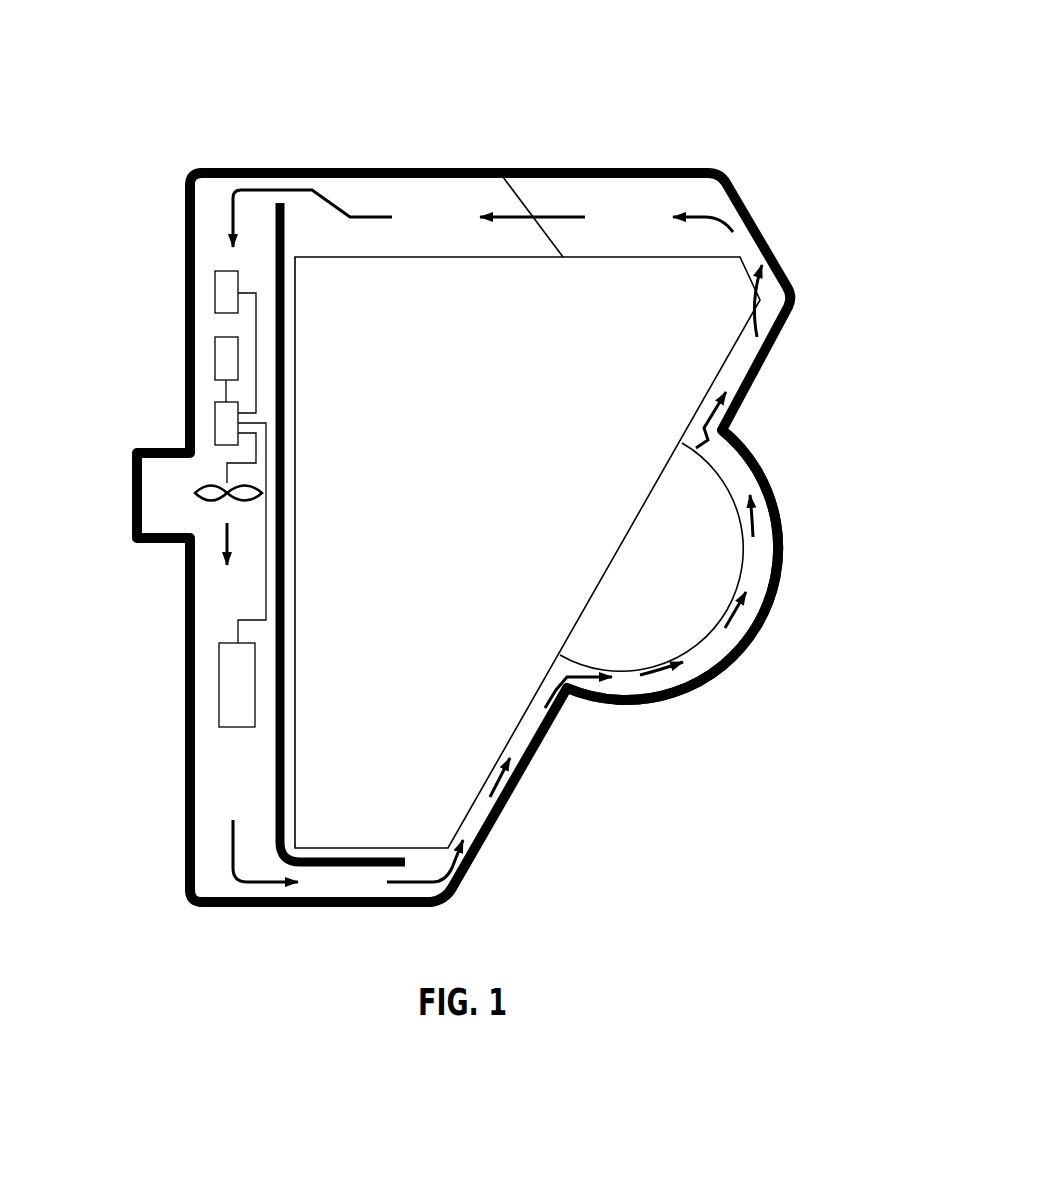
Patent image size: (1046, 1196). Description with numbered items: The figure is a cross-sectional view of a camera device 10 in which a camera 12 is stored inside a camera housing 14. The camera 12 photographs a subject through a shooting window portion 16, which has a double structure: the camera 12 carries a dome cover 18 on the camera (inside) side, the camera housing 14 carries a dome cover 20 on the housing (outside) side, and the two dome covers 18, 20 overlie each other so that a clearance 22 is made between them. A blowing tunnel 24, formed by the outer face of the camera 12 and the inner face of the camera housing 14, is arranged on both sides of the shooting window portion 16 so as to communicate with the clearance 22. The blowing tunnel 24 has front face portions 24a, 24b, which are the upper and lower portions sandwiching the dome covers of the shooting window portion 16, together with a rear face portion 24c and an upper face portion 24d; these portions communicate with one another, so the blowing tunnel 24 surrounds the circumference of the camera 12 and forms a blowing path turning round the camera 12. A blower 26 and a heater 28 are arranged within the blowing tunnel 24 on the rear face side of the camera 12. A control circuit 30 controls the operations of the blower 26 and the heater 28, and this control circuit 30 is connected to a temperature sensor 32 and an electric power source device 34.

The camera device 10 is at (733, 140).
The camera 12 is at (422, 287).
The camera housing 14 is at (311, 168).
The shooting window portion 16 is at (788, 489).
The dome cover of the camera side 18 is at (717, 563).
The dome cover of the housing side 20 is at (757, 617).
The clearance 22 is at (707, 643).
The blowing tunnel 24 is at (478, 820).
The front face portion 24a is at (740, 368).
The front face portion 24b is at (523, 737).
The rear face portion 24c is at (220, 810).
The upper face portion 24d is at (615, 217).
The blower 26 is at (198, 493).
The heater 28 is at (219, 680).
The control circuit 30 is at (215, 420).
The temperature sensor 32 is at (215, 291).
The electric power source device 34 is at (215, 355).